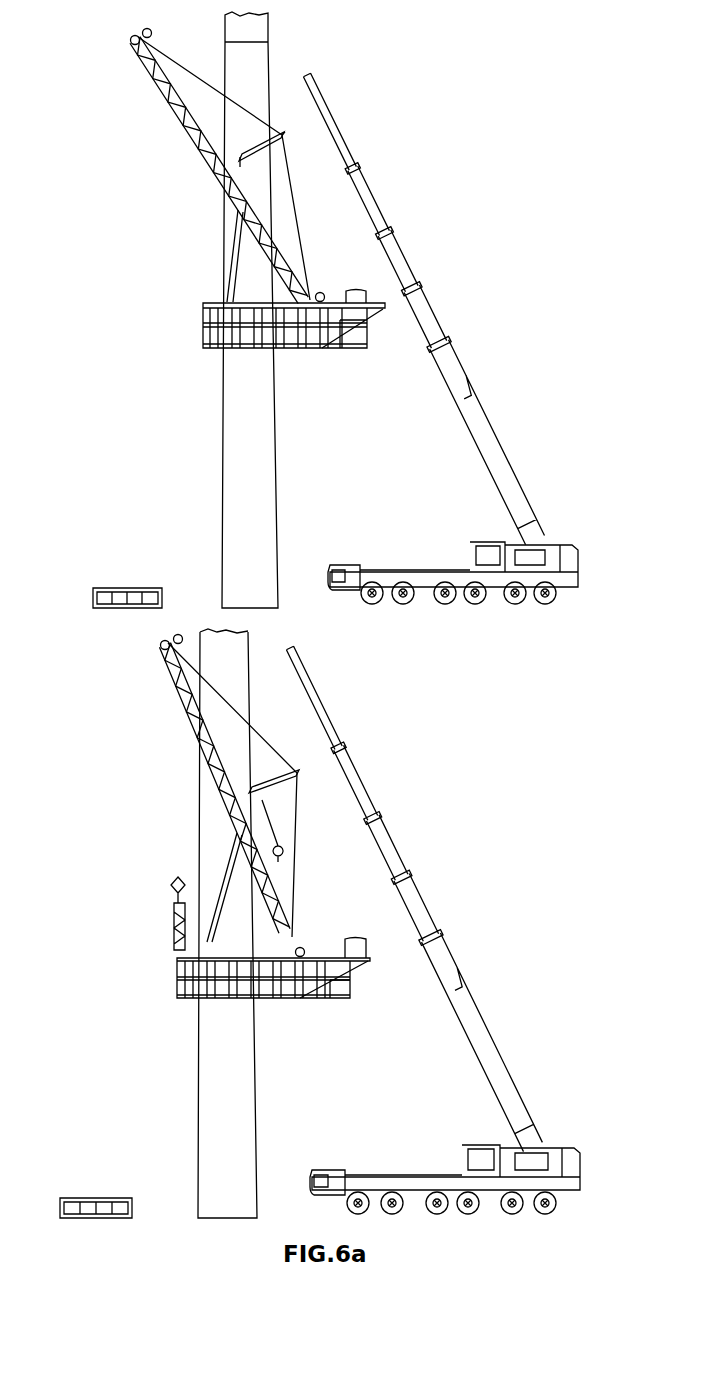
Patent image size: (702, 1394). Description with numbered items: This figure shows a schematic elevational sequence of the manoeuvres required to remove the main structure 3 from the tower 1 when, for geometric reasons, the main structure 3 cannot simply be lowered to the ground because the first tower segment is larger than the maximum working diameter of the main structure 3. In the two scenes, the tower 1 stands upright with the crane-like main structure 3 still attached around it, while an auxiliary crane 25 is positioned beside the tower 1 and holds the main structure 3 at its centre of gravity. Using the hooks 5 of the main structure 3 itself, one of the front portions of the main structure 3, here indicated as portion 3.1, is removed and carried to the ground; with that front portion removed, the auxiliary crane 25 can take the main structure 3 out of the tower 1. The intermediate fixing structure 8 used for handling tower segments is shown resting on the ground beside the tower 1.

The tower 1 is at (222, 455).
The main structure 3 is at (208, 350).
The platform connecting member 3.1 is at (170, 928).
The hooks 5 is at (160, 890).
The intermediate fixing structure 8 is at (95, 590).
The auxiliary crane 25 is at (385, 220).